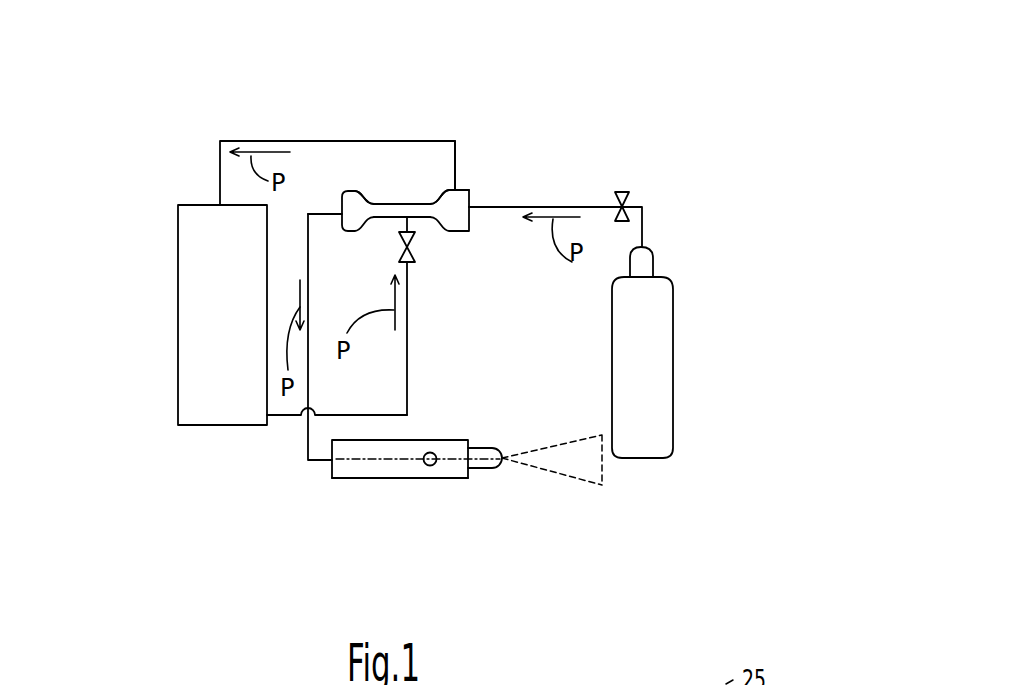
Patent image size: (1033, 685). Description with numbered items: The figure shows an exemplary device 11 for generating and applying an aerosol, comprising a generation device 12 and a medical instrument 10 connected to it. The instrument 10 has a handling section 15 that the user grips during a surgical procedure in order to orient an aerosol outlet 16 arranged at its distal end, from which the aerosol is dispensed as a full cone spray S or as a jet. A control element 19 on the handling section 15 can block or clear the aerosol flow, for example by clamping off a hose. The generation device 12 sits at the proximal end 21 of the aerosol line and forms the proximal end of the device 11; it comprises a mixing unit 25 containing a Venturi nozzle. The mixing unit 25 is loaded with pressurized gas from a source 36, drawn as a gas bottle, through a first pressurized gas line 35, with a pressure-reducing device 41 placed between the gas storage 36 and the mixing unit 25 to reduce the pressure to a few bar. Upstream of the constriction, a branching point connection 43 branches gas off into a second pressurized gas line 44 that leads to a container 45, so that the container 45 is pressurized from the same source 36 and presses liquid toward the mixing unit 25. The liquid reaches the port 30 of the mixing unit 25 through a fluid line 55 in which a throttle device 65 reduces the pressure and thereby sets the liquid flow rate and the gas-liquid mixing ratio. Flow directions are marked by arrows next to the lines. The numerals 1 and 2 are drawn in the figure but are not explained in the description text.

The test specimen 1 is at (462, 202).
The neck region of specimen 2 is at (396, 209).
The medical instrument 10 is at (452, 506).
The device 11 is at (551, 103).
The generation device 12 is at (469, 133).
The handling section 15 is at (362, 480).
The aerosol outlet 16 is at (507, 476).
The control element 19 is at (433, 452).
The proximal end 21 is at (333, 191).
The mixing unit 25 is at (409, 176).
The port for a fluid 30 is at (480, 196).
The first pressurized gas line 35 is at (518, 207).
The source for pressurized gas 36 is at (674, 348).
The pressure-reducing device 41 is at (647, 179).
The branching point connection 43 is at (463, 177).
The second pressurized gas line 44 is at (358, 140).
The container 45 is at (178, 313).
The fluid line 55 is at (409, 352).
The throttle device 65 is at (428, 254).
The full cone spray S is at (580, 482).